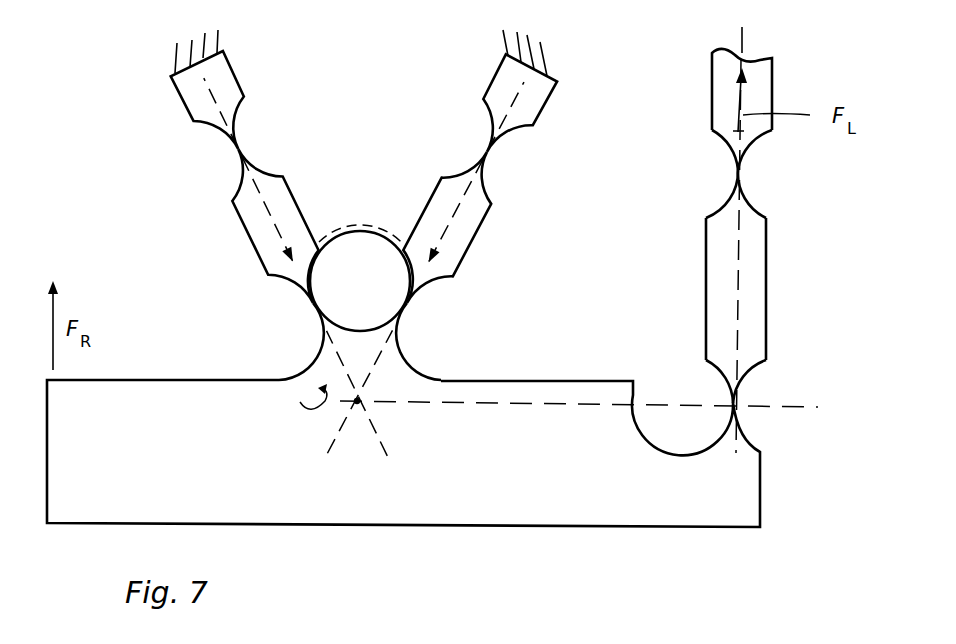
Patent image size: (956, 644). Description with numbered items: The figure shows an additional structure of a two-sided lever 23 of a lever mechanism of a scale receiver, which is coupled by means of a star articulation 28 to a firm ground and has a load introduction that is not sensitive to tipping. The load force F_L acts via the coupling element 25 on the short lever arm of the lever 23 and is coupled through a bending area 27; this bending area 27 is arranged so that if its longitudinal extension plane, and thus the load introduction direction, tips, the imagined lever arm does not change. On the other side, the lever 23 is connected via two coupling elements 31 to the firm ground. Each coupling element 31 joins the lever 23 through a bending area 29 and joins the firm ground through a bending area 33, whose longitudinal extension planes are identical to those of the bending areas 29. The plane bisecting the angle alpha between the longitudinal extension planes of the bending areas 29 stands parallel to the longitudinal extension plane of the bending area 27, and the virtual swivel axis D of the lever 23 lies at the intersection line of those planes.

The lever 23 is at (533, 512).
The coupling element 25 is at (761, 296).
The bending area 27 is at (743, 176).
The star articulation 28 is at (357, 234).
The bending areas 29 is at (308, 310).
The coupling elements 31 is at (258, 228).
The bending areas 33 is at (489, 152).